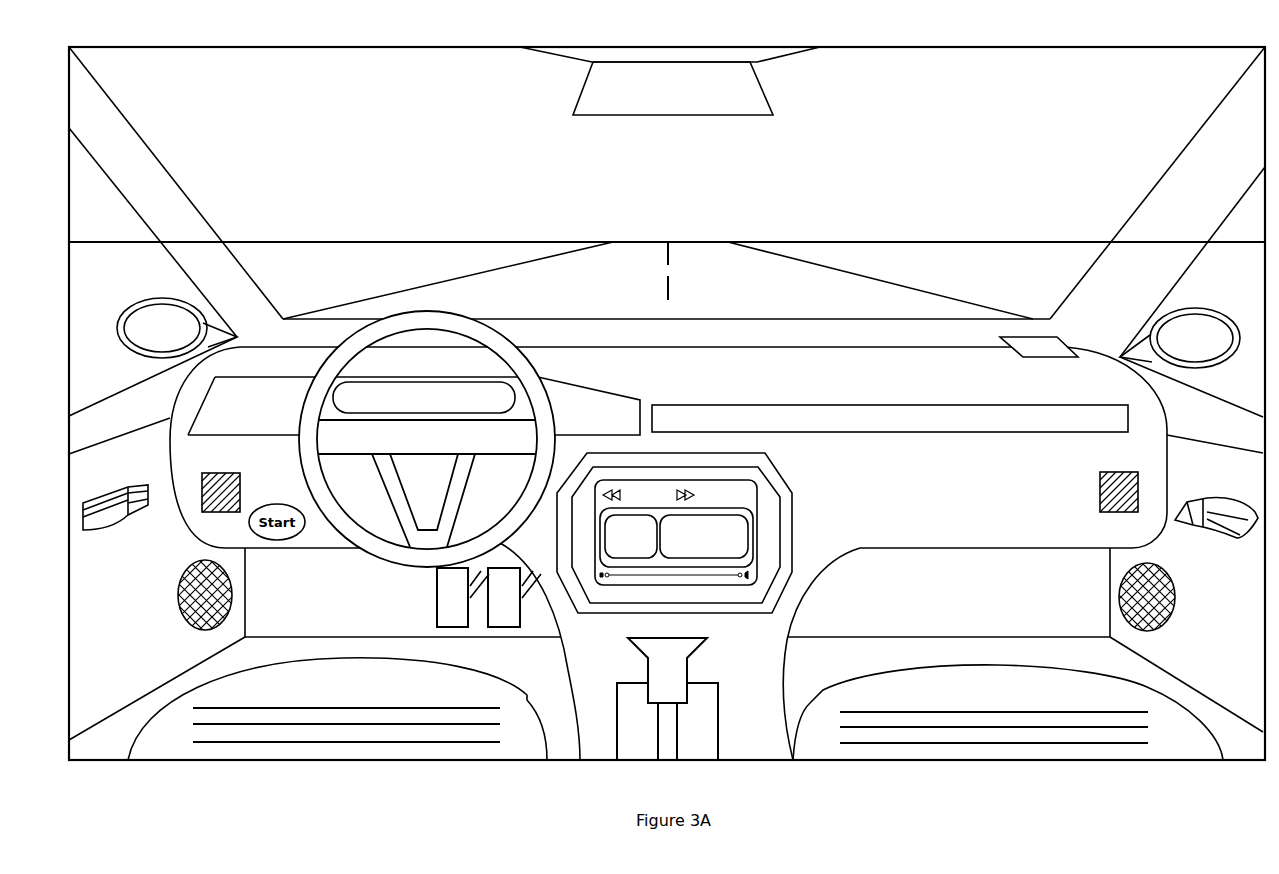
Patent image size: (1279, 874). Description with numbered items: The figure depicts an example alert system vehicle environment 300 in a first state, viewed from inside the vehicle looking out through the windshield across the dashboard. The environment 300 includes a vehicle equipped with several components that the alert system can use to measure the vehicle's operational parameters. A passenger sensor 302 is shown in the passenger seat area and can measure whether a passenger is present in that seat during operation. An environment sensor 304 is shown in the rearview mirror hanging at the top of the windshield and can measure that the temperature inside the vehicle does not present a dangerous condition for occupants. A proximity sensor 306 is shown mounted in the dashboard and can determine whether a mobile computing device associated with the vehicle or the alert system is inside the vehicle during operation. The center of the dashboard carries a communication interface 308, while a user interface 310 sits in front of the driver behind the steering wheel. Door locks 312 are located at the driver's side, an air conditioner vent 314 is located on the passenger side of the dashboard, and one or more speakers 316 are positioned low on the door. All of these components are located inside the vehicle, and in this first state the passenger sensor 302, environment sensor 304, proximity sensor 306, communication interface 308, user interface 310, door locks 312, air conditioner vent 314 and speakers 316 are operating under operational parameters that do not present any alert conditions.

The alert system vehicle environment 300 is at (1228, 48).
The passenger sensor 302 is at (1073, 685).
The environment sensor 304 is at (590, 102).
The proximity sensor 306 is at (1027, 352).
The communication interface 308 is at (600, 527).
The user interface 310 is at (337, 387).
The door locks 312 is at (138, 486).
The air conditioner vent 314 is at (1100, 492).
The speakers 316 is at (178, 566).